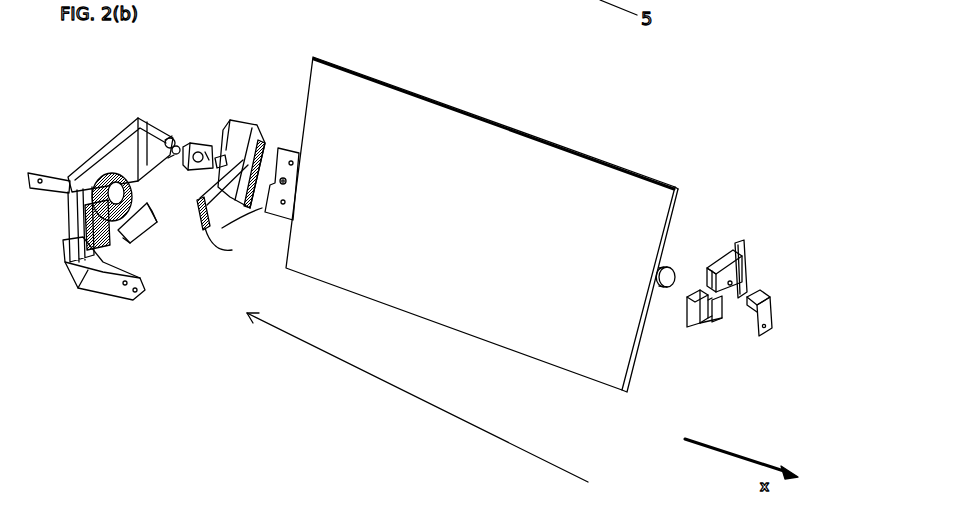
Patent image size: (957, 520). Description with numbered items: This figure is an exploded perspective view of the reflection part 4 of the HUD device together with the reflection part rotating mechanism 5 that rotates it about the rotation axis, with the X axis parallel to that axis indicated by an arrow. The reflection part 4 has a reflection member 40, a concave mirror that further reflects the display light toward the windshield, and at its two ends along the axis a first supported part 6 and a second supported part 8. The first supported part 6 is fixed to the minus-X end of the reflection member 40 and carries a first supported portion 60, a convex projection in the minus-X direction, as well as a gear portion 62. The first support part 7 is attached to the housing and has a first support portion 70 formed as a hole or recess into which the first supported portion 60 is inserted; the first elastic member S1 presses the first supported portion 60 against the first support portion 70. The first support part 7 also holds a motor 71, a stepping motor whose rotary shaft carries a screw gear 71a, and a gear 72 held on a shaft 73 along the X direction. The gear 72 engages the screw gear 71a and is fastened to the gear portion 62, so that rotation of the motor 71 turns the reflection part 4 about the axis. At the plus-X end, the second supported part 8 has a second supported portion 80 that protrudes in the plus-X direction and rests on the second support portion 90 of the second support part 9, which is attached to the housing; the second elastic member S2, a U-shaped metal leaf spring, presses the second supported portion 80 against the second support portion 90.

The reflection part 4 is at (446, 93).
The reflection member 40 is at (520, 145).
The reflection part rotating mechanism 5 is at (662, 397).
The first supported part 6 is at (245, 121).
The first supported portion 60 is at (218, 157).
The gear portion 62 is at (207, 233).
The first support part 7 is at (108, 145).
The first support portion 70 is at (174, 147).
The motor 71 is at (120, 253).
The screw gear 71a is at (105, 256).
The gear 72 is at (131, 226).
The shaft 73 is at (148, 200).
The second supported part 8 is at (672, 257).
The second supported portion 80 is at (668, 289).
The second support part 9 is at (740, 246).
The second support portion 90 is at (728, 311).
The first elastic member S1 is at (192, 143).
The second elastic member S2 is at (771, 331).